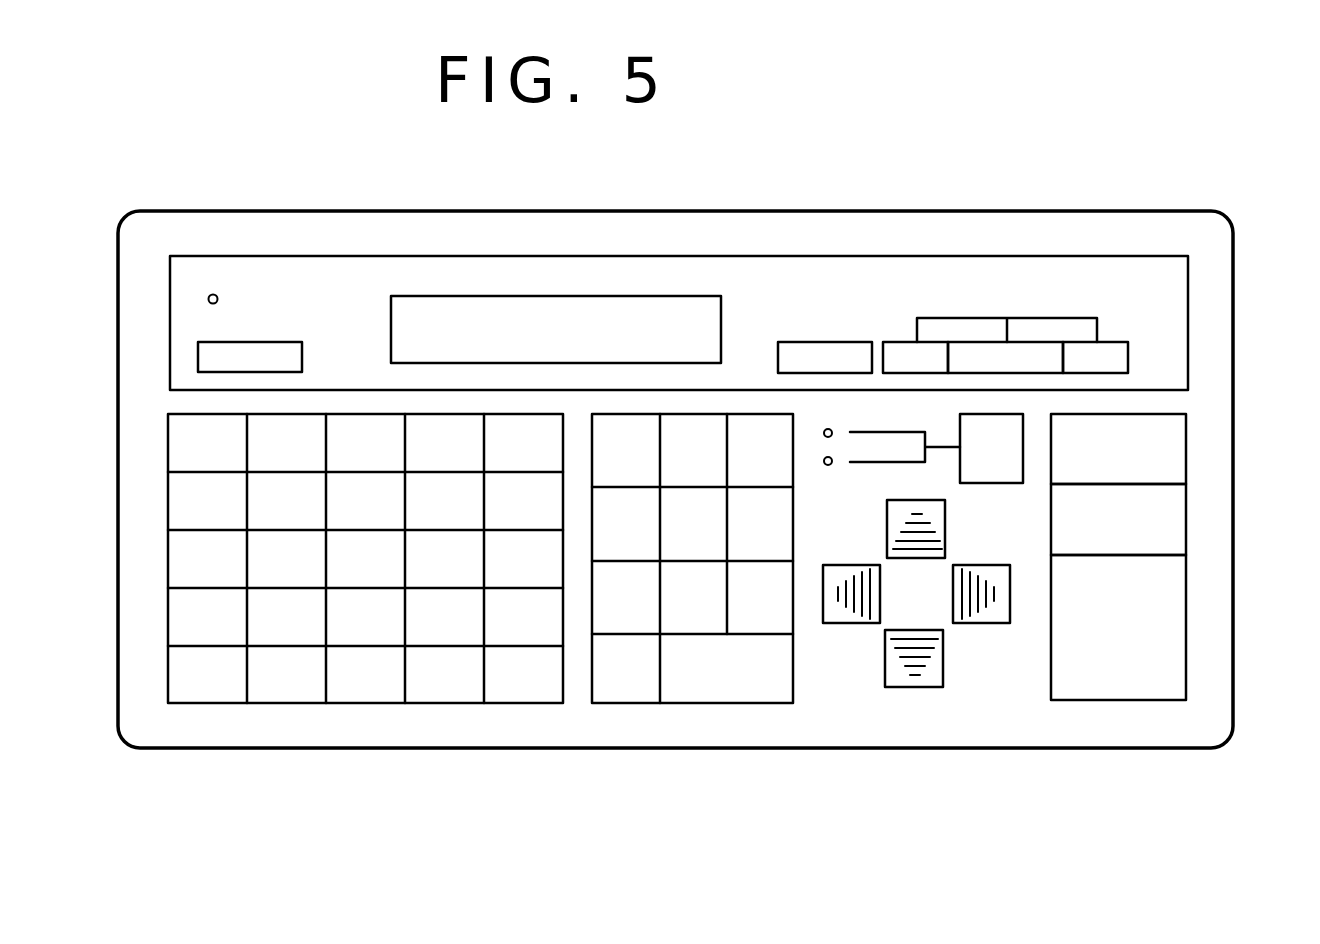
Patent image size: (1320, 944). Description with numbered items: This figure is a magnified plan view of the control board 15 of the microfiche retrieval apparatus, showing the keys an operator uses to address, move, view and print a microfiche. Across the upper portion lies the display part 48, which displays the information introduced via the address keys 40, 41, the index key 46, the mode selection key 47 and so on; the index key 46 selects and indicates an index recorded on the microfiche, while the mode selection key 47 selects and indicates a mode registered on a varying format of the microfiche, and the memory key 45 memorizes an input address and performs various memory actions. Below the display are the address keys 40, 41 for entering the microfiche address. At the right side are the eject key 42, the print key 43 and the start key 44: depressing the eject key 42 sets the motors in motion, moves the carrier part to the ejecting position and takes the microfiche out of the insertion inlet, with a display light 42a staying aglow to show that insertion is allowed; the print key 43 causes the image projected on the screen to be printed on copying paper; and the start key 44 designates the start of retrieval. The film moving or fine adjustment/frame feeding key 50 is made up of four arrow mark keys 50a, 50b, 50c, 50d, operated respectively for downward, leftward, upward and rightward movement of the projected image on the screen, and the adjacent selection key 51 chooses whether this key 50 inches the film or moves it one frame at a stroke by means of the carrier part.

The control board 15 is at (1145, 212).
The address key 40 is at (282, 704).
The address key 41 is at (622, 704).
The eject key 42 is at (1189, 452).
The indicator lamp 42a is at (213, 294).
The print key 43 is at (1189, 522).
The start key 44 is at (1189, 633).
The memory key 45 is at (1003, 316).
The index key 46 is at (820, 336).
The mode selection key 47 is at (198, 354).
The display part 48 is at (538, 296).
The fine adjustment/frame feeding key 50 is at (920, 654).
The arrow mark key 50a is at (945, 533).
The arrow mark key 50b is at (983, 623).
The arrow mark key 50c is at (915, 687).
The arrow mark key 50d is at (848, 623).
The selection key 51 is at (1018, 428).